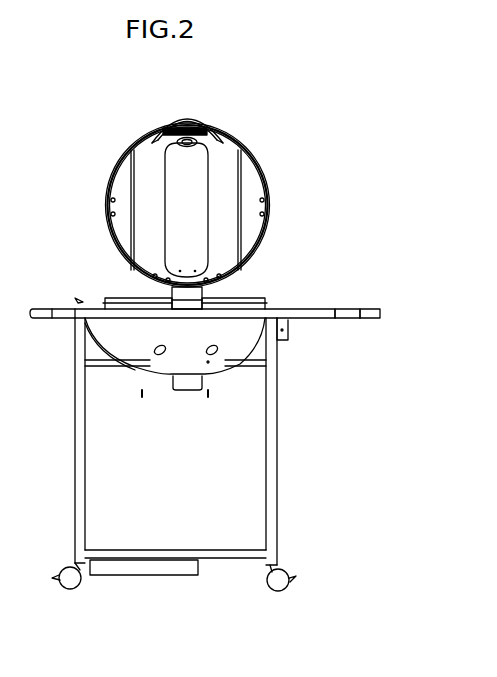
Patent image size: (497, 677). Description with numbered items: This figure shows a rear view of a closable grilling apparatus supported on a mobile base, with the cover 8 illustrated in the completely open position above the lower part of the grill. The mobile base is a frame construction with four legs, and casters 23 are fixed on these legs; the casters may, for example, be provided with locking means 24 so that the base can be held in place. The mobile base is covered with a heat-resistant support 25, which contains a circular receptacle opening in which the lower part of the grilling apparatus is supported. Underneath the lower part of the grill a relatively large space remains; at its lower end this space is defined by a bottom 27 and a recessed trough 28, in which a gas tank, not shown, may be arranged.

The cover 8 is at (232, 212).
The heat-resistant support 25 is at (58, 312).
The bottom 27 is at (233, 557).
The recessed trough 28 is at (145, 563).
The casters 23 is at (75, 578).
The locking means 24 is at (295, 577).